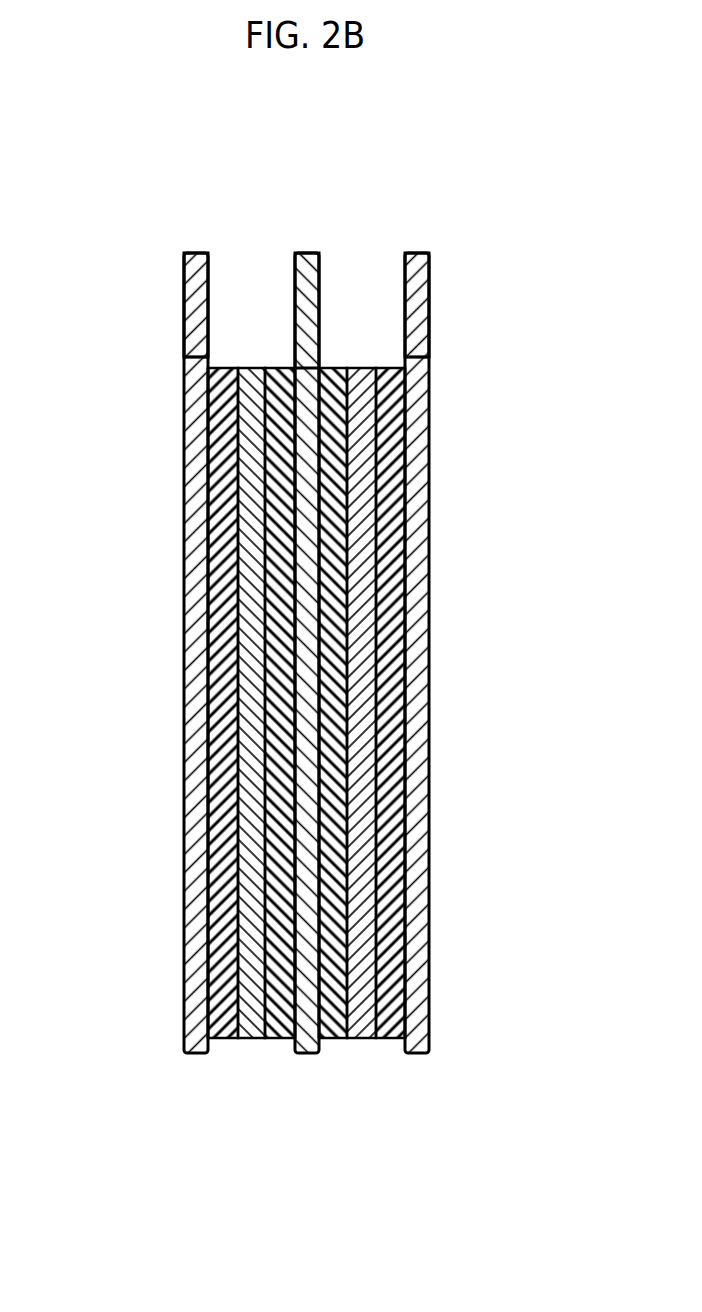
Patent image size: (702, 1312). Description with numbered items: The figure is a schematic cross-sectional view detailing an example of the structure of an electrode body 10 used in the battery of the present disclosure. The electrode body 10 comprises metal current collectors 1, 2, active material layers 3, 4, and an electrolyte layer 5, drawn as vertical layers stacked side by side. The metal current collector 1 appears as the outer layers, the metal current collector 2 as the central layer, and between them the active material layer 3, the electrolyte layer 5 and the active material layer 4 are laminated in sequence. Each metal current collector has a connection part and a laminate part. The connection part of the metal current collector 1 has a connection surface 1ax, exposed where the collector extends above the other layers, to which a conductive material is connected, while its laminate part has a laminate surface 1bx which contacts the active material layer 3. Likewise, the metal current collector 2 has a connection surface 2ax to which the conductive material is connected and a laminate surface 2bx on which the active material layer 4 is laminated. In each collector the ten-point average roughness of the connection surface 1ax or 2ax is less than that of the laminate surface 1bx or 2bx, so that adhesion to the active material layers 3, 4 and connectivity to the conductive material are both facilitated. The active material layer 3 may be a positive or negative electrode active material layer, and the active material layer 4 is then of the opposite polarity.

The electrode body 10 is at (324, 134).
The metal current collector 1 is at (192, 1054).
The metal current collector 2 is at (308, 1054).
The active material layer 3 is at (220, 1040).
The active material layer 4 is at (277, 1040).
The electrolyte layer 5 is at (247, 1040).
The connection surface 1ax is at (185, 302).
The connection surface 2ax is at (295, 295).
The laminate surface 1bx is at (213, 693).
The laminate surface 2bx is at (293, 803).